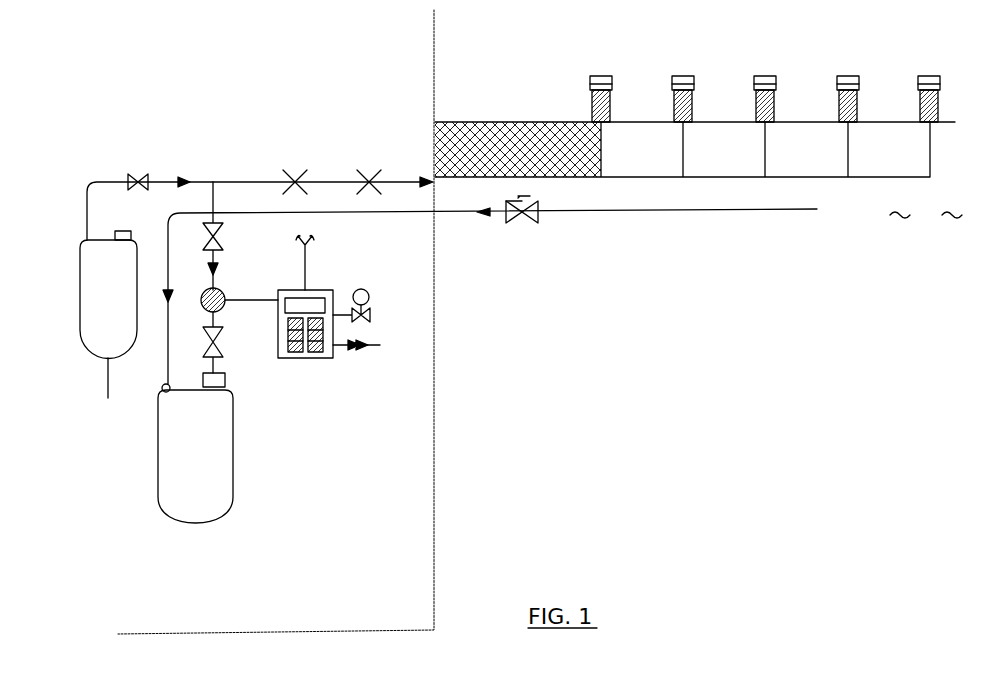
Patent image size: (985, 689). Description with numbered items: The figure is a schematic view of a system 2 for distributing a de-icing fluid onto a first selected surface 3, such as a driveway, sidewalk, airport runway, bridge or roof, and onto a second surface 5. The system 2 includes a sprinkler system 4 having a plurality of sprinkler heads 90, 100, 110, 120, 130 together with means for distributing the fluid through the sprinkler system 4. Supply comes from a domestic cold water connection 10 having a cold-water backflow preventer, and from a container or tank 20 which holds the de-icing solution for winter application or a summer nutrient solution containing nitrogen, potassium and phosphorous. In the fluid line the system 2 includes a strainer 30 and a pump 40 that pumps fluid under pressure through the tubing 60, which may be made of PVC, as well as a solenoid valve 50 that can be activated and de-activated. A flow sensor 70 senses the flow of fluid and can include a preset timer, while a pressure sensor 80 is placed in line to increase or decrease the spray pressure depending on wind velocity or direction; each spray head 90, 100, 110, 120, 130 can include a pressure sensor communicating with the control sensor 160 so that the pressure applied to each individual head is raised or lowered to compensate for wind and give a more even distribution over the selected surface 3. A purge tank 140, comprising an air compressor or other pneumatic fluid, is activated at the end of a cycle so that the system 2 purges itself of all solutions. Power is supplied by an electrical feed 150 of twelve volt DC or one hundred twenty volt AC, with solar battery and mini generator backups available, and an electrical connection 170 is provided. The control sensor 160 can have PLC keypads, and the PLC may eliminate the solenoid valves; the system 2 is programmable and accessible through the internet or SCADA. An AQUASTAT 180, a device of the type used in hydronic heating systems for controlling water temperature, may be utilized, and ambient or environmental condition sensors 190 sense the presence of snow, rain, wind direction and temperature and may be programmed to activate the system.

The system 2 is at (245, 72).
The first selected surface 3 is at (487, 122).
The sprinkler system 4 is at (815, 232).
The second surface 5 is at (926, 214).
The domestic cold water connection 10 is at (522, 223).
The container or tank 20 is at (168, 456).
The strainer 30 is at (222, 340).
The pump 40 is at (224, 294).
The solenoid valve 50 is at (138, 172).
The tubing 60 is at (254, 181).
The flow sensor 70 is at (294, 168).
The pressure sensor 80 is at (368, 168).
The sprinkler head 90 is at (600, 76).
The sprinkler head 100 is at (683, 76).
The sprinkler head 110 is at (764, 76).
The sprinkler head 120 is at (848, 76).
The sprinkler head 130 is at (928, 76).
The purge tank 140 is at (80, 300).
The electrical feed 150 is at (313, 358).
The control sensor 160 is at (104, 378).
The electrical connection 170 is at (368, 352).
The AQUASTAT 180 is at (368, 291).
The ambient or environmental condition sensors 190 is at (320, 242).